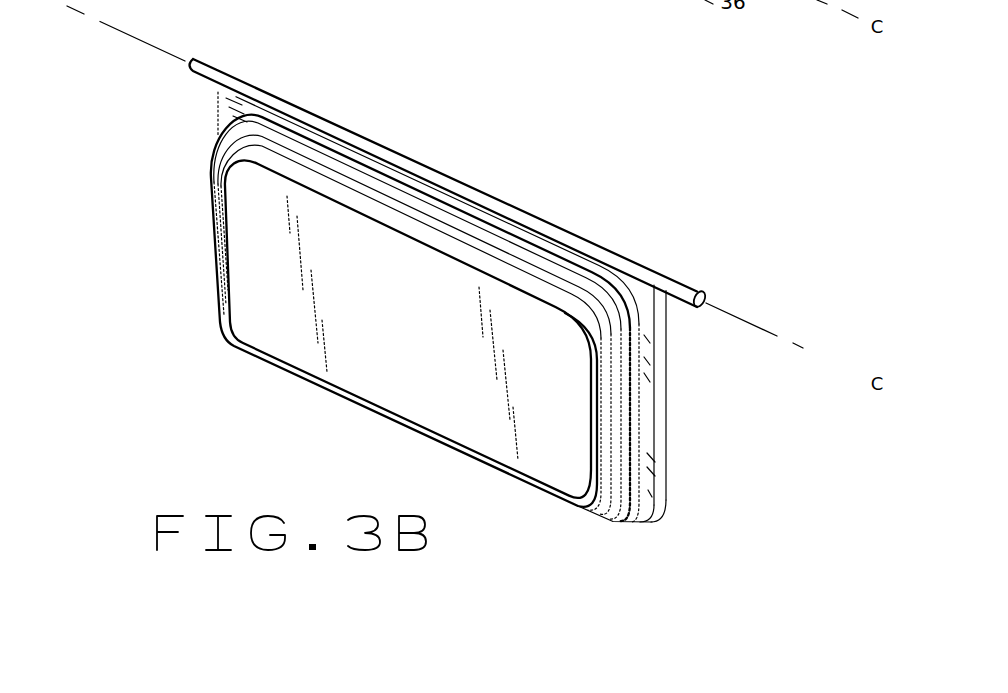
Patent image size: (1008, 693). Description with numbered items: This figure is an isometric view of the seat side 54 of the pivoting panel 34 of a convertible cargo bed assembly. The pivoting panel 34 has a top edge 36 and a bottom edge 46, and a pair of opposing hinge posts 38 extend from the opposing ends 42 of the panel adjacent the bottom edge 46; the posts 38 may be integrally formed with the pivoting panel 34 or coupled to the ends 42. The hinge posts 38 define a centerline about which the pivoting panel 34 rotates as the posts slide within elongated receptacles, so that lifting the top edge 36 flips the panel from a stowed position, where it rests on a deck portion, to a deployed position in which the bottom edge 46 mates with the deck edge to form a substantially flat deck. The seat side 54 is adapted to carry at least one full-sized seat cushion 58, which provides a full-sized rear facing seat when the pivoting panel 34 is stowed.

The pivoting panel 34 is at (460, 124).
The top edge 36 is at (628, 522).
The hinge posts 38 is at (209, 60).
The opposing ends 42 is at (218, 108).
The bottom edge 46 is at (473, 196).
The seat side 54 is at (653, 518).
The full-sized seat cushion 58 is at (408, 363).